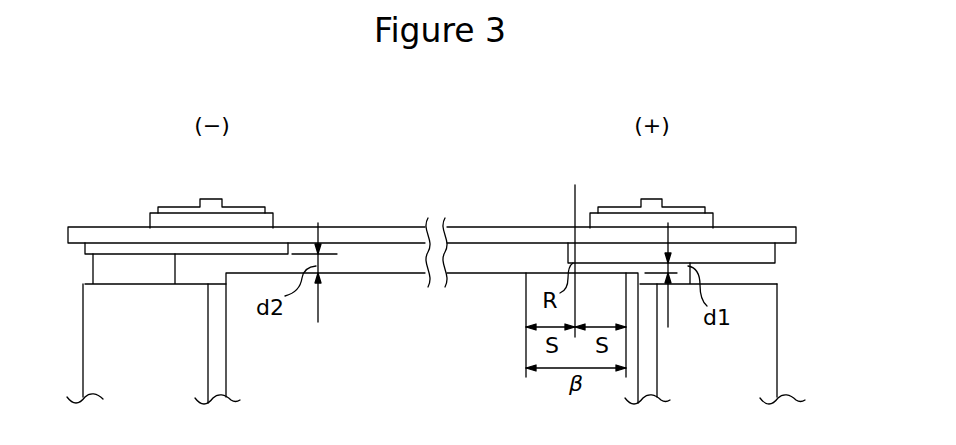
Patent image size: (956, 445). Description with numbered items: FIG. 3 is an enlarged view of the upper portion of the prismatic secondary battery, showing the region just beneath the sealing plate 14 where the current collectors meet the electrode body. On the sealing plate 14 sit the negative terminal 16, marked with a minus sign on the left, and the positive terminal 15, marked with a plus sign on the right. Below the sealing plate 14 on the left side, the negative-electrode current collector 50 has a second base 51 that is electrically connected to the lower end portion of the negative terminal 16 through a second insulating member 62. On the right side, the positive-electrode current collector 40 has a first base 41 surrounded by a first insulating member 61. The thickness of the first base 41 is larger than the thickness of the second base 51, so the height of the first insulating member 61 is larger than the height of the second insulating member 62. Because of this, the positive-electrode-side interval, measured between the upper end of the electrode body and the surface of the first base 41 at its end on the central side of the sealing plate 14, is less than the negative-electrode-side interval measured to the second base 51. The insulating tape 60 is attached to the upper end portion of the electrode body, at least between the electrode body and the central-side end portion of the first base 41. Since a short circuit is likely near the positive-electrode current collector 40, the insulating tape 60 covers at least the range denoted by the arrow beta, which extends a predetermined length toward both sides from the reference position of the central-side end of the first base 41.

The sealing plate 14 is at (485, 226).
The positive terminal 15 is at (653, 207).
The negative terminal 16 is at (212, 207).
The positive-electrode current collector 40 is at (762, 273).
The first base 41 is at (614, 253).
The negative-electrode current collector 50 is at (100, 272).
The second base 51 is at (115, 250).
The insulating tape 60 is at (383, 272).
The first insulating member 61 is at (768, 252).
The second insulating member 62 is at (90, 249).